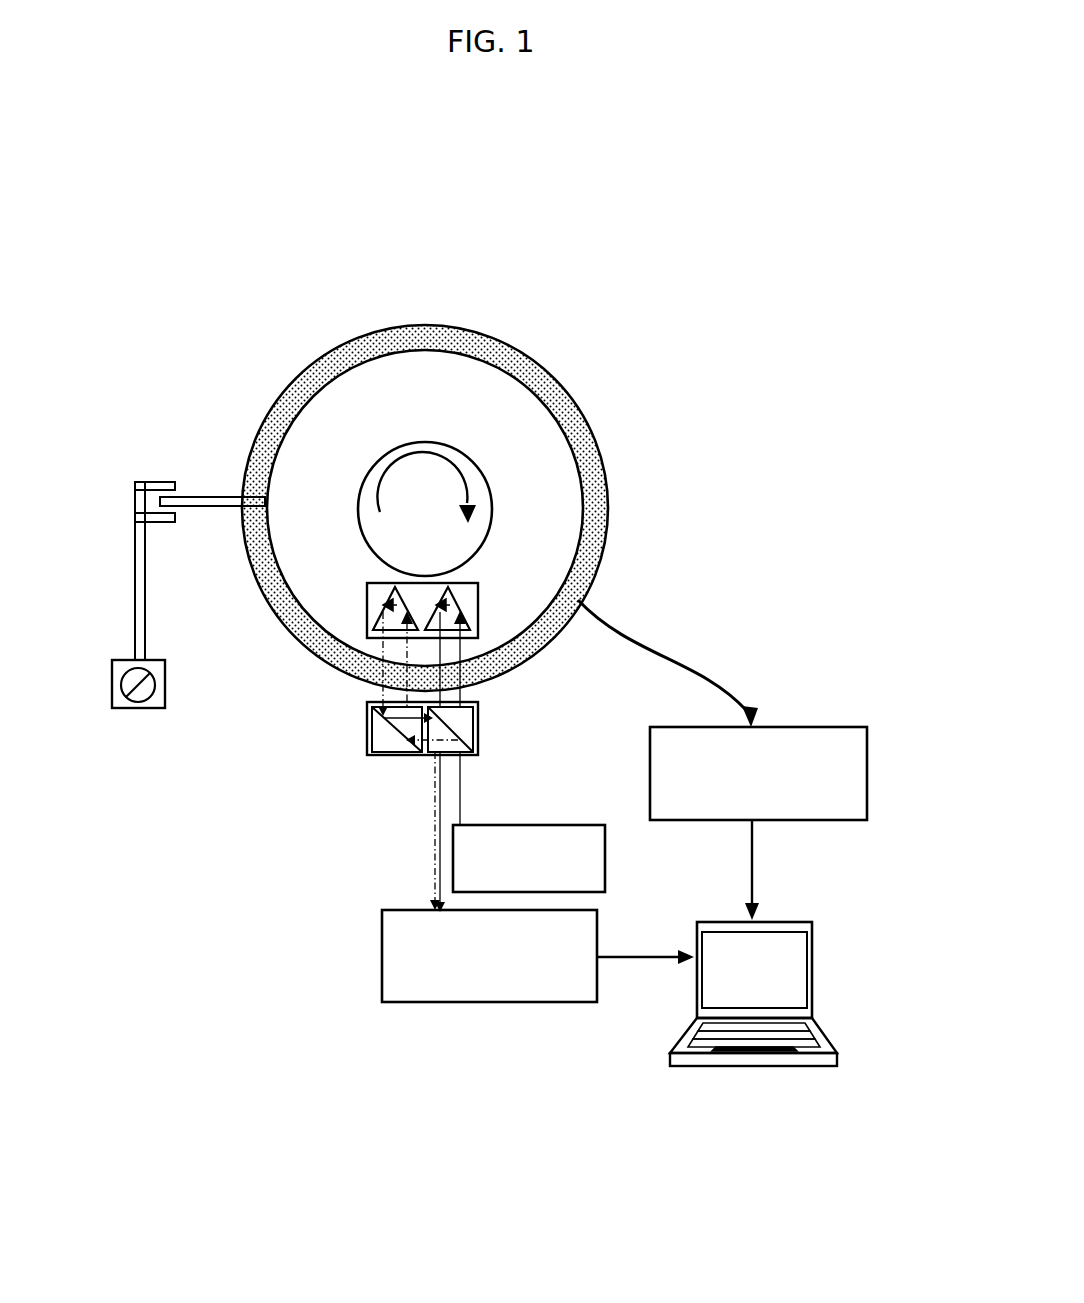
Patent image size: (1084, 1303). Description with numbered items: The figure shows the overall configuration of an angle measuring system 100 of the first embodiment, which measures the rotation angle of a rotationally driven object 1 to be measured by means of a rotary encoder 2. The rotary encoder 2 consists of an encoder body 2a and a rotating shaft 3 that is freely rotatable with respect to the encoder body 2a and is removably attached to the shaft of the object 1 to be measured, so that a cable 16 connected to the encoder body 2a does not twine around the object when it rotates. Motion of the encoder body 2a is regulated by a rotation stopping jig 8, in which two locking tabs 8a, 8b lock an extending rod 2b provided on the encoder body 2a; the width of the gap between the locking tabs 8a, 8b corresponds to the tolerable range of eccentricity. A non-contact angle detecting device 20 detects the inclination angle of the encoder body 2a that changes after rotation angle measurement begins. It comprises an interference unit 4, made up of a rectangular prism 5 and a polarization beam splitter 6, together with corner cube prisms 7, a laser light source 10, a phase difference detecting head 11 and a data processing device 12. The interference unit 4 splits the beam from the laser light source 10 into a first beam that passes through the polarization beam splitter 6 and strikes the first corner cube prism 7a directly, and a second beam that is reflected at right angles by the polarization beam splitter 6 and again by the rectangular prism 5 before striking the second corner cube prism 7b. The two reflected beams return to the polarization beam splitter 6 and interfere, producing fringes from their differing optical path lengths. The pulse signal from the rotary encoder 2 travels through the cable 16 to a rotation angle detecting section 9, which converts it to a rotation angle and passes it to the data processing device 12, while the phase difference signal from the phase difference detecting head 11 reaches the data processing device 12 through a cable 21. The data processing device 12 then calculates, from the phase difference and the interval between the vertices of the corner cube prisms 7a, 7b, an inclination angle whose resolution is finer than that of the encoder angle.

The angle measuring system 100 is at (637, 188).
The object to be measured 1 is at (338, 353).
The rotary encoder 2 is at (720, 238).
The encoder body 2a is at (496, 428).
The extending rod 2b is at (205, 497).
The rotating shaft 3 is at (421, 448).
The interference unit 4 is at (286, 801).
The rectangular prism 5 is at (400, 736).
The polarization beam splitter 6 is at (427, 752).
The corner cube prisms 7 is at (622, 560).
The first corner cube prism 7a is at (457, 593).
The second corner cube prism 7b is at (405, 592).
The rotation stopping jig 8 is at (220, 596).
The locking tab 8a is at (160, 482).
The locking tab 8b is at (166, 550).
The rotation angle detecting section 9 is at (805, 727).
The laser light source 10 is at (553, 825).
The phase difference detecting head 11 is at (600, 922).
The data processing device 12 is at (710, 1067).
The cable 16 is at (690, 655).
The non-contact angle detecting device 20 is at (428, 1030).
The cable 21 is at (630, 960).